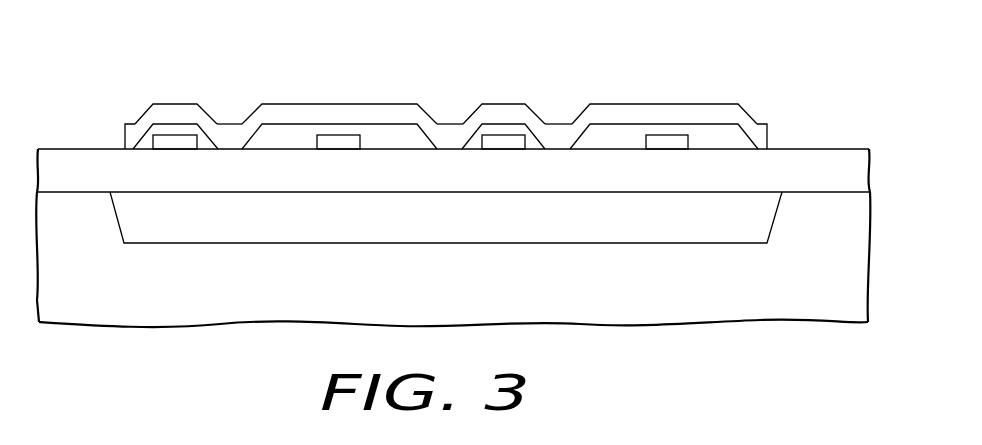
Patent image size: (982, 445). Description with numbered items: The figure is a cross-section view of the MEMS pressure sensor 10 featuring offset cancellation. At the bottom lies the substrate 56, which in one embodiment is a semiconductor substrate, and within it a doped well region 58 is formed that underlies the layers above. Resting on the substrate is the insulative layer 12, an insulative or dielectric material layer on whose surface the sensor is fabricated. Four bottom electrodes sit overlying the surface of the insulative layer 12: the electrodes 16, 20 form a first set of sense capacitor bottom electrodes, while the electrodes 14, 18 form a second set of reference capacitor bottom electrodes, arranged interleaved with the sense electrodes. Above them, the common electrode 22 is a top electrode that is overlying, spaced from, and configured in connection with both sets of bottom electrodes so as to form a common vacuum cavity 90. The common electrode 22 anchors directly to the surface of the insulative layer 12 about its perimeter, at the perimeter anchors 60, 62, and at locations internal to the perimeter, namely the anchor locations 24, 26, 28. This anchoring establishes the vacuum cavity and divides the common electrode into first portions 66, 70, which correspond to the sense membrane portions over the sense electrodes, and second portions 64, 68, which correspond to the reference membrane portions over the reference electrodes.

The MEMS pressure sensor 10 is at (806, 41).
The insulative layer 12 is at (810, 182).
The electrode 14 is at (177, 150).
The electrode 16 is at (341, 150).
The electrode 18 is at (505, 150).
The electrode 20 is at (670, 150).
The common electrode 22 is at (704, 95).
The anchor location 24 is at (231, 112).
The anchor location 26 is at (445, 112).
The anchor location 28 is at (561, 112).
The substrate 56 is at (683, 290).
The doped well region 58 is at (525, 227).
The perimeter anchor 60 is at (781, 132).
The perimeter anchor 62 is at (112, 131).
The second portion 64 is at (175, 86).
The first portion 66 is at (339, 86).
The second portion 68 is at (502, 86).
The first portion 70 is at (668, 86).
The common vacuum cavity 90 is at (143, 150).